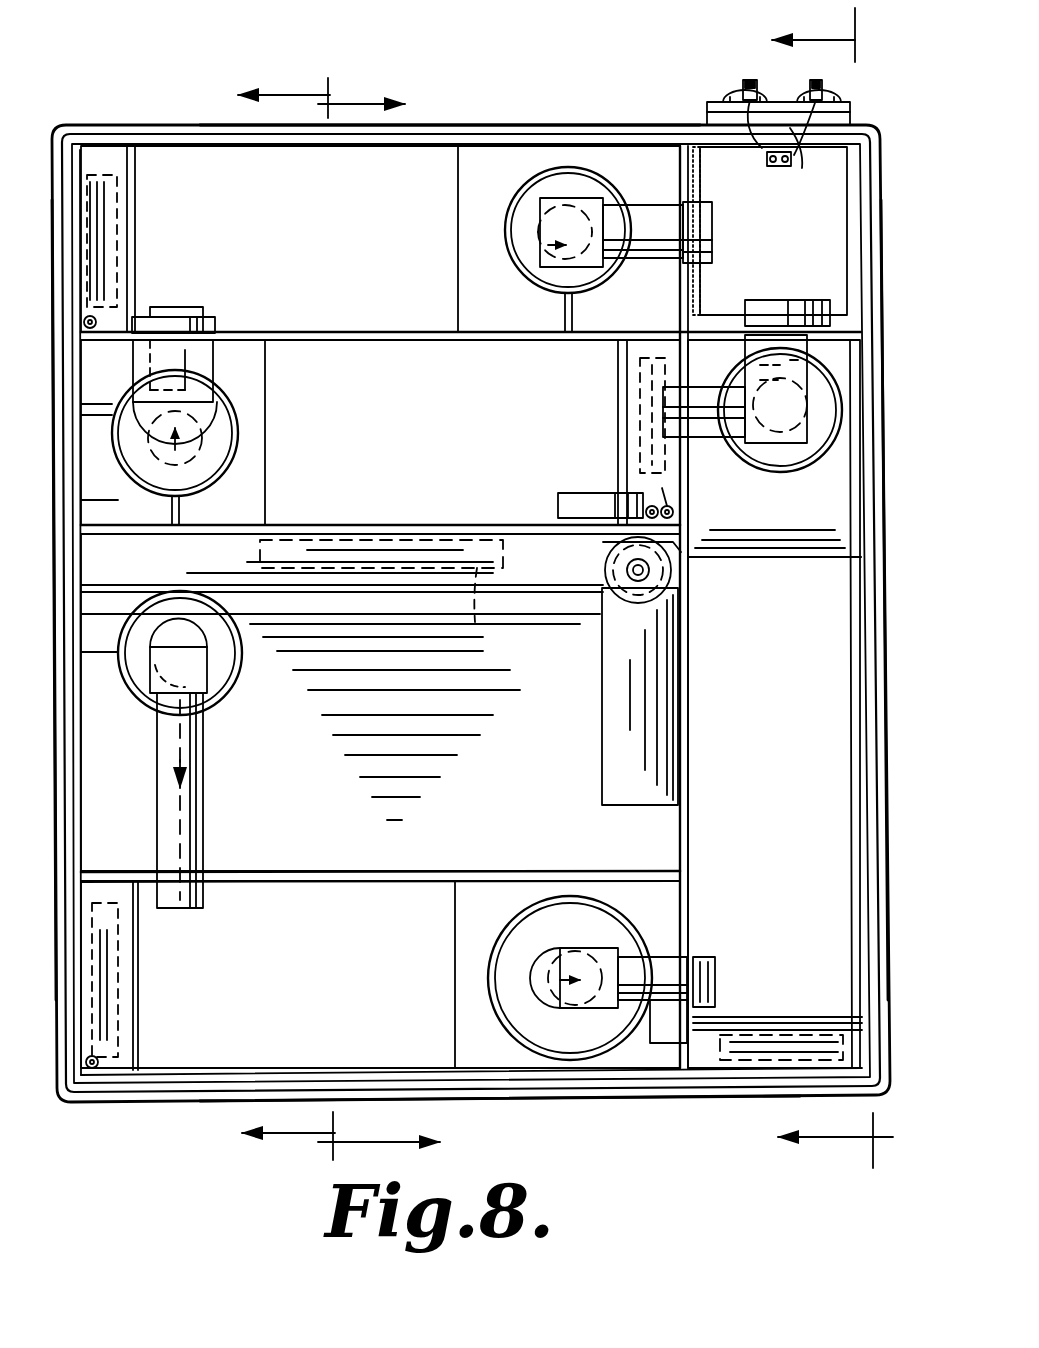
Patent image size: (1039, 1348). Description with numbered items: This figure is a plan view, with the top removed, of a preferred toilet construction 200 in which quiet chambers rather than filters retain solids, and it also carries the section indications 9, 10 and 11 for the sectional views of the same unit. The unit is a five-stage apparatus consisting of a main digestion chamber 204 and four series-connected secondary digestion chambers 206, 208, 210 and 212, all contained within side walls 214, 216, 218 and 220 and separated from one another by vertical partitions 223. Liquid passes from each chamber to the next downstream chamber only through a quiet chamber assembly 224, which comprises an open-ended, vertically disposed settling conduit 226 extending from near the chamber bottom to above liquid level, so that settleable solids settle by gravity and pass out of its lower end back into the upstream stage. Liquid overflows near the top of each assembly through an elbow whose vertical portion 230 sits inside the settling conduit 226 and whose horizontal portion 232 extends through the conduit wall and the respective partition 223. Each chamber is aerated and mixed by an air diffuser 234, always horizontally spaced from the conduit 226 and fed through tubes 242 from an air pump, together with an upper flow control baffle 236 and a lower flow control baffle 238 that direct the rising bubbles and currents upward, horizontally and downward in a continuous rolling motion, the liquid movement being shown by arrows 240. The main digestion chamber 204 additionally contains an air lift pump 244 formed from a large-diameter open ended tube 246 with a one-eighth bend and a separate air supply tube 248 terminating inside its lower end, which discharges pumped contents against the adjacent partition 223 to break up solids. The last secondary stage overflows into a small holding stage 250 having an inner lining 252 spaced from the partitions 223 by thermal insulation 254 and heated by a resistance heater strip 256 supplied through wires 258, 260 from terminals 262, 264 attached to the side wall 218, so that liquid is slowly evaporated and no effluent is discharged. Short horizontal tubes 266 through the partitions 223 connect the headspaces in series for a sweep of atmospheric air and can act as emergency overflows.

The toilet construction 200 is at (150, 122).
The main digestion chamber 204 is at (535, 764).
The secondary digestion chamber 206 is at (335, 996).
The secondary digestion chamber 208 is at (758, 756).
The secondary digestion chamber 210 is at (476, 451).
The secondary digestion chamber 212 is at (338, 254).
The side wall 214 is at (166, 1104).
The side wall 216 is at (49, 150).
The side wall 218 is at (683, 124).
The side wall 220 is at (893, 677).
The vertical partitions 223 is at (323, 333).
The quiet chamber assembly 224 is at (512, 202).
The settling conduit 226 is at (548, 290).
The vertical portion 230 is at (538, 251).
The horizontal portion 232 is at (185, 312).
The air diffuser 234 is at (120, 184).
The upper flow control baffle 236 is at (137, 243).
The lower flow control baffle 238 is at (458, 305).
The arrows 240 is at (674, 503).
The tubes 242 is at (126, 341).
The air lift pump 244 is at (600, 788).
The open ended tube 246 is at (602, 715).
The air supply tube 248 is at (692, 581).
The holding stage 250 is at (826, 249).
The inner lining 252 is at (738, 158).
The thermal insulation 254 is at (702, 287).
The resistance heater strip 256 is at (729, 230).
The wire 258 is at (767, 104).
The wire 260 is at (806, 160).
The terminal 262 is at (752, 84).
The terminal 264 is at (824, 85).
The horizontal tubes 266 is at (222, 321).
The section line 9 is at (269, 618).
The section line 10 is at (408, 621).
The section line 11 is at (820, 592).